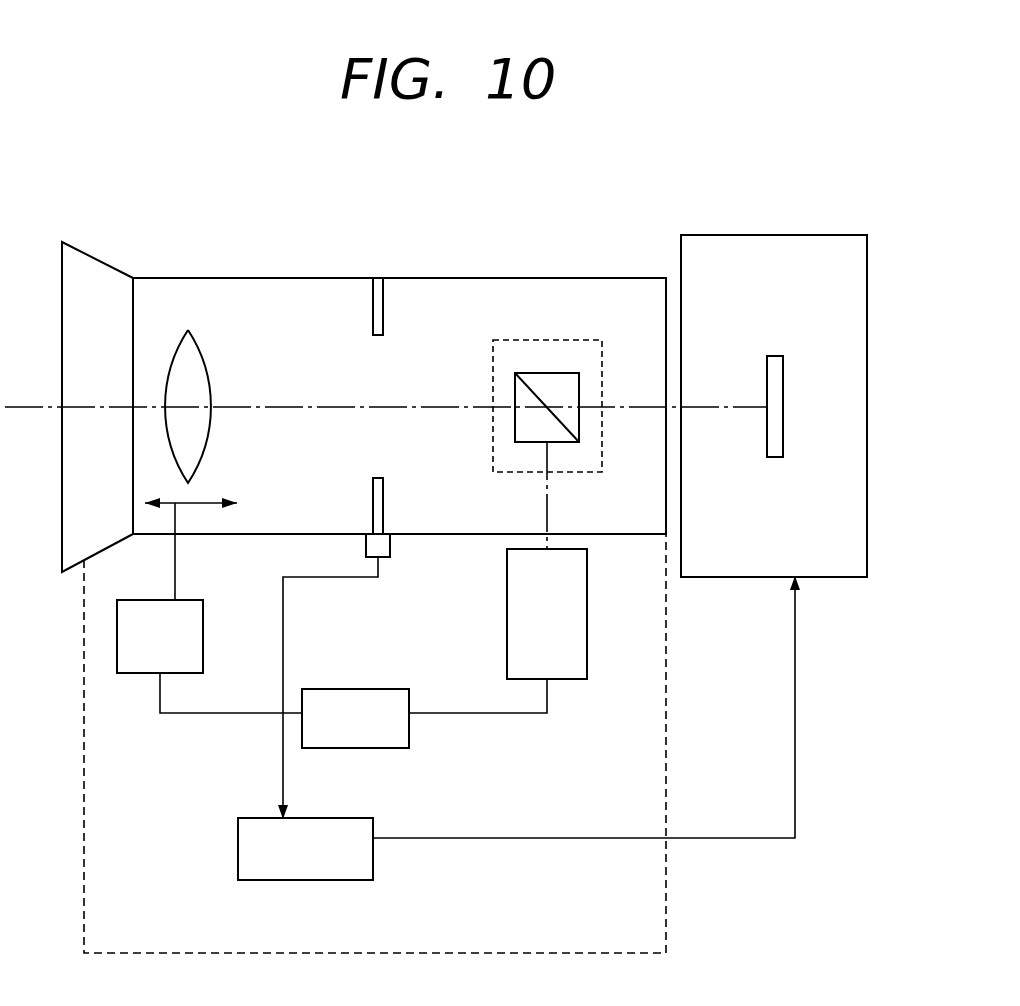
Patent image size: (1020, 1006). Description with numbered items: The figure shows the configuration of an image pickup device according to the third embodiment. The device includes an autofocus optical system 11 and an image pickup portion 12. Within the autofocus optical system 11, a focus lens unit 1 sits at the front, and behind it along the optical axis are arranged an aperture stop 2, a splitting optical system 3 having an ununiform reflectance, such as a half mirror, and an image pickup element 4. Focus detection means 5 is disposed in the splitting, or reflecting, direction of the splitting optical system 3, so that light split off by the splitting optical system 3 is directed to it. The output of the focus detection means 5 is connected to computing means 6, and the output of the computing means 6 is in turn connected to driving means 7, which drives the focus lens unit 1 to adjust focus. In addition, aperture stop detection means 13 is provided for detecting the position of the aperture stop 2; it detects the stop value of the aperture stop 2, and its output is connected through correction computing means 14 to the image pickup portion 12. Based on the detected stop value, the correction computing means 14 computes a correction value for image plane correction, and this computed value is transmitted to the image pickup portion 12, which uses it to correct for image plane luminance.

The focus lens unit 1 is at (195, 363).
The aperture stop 2 is at (378, 310).
The splitting optical system 3 is at (551, 386).
The image pickup element 4 is at (775, 390).
The focus detection means 5 is at (575, 634).
The computing means 6 is at (398, 732).
The driving means 7 is at (138, 663).
The autofocus optical system 11 is at (276, 278).
The image pickup portion 12 is at (762, 235).
The aperture stop detection means 13 is at (383, 547).
The correction computing means 14 is at (245, 850).